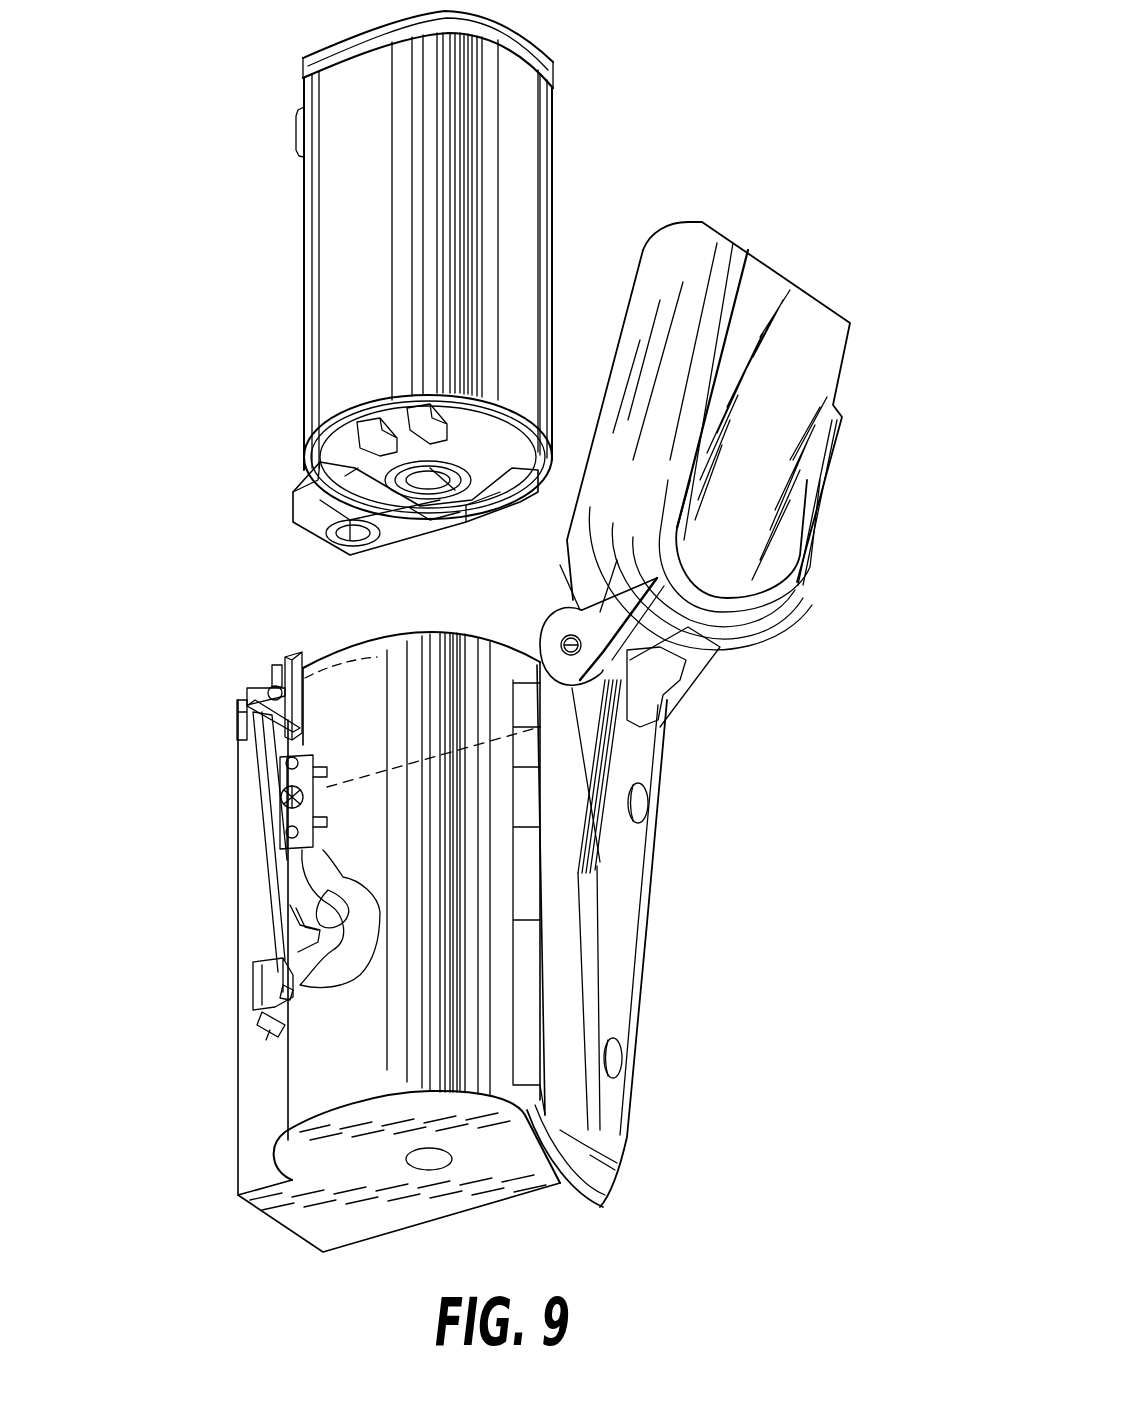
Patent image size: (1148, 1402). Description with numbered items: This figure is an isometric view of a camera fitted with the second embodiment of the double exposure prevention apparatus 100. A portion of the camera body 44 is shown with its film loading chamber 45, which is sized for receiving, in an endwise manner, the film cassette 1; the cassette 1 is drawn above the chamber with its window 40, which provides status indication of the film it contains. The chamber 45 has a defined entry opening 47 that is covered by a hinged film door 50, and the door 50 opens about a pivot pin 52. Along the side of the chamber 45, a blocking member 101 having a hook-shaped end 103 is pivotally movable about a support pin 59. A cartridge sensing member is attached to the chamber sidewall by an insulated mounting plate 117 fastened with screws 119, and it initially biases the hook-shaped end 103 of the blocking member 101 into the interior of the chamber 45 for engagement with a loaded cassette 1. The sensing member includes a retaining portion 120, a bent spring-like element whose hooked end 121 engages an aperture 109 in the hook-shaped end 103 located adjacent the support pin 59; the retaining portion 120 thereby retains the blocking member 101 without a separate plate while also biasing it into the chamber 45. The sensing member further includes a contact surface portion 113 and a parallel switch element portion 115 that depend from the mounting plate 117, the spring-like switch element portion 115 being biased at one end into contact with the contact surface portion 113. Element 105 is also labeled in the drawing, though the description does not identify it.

The film cassette 1 is at (300, 262).
The window 40 is at (325, 482).
The hinged film door 50 is at (840, 362).
The pivot pin 52 is at (558, 635).
The entry opening 47 is at (383, 663).
The film loading chamber 45 is at (315, 1068).
The camera body 44 is at (553, 825).
The double exposure prevention apparatus 100 is at (150, 663).
The support pin 59 is at (272, 688).
The hooked end 121 is at (240, 712).
The aperture 109 is at (270, 747).
The insulated mounting plate 117 is at (282, 815).
The retaining portion 120 is at (286, 763).
The screws 119 is at (288, 794).
The hook-shaped end 103 is at (330, 870).
The blocking member 101 is at (313, 927).
The bracket 105 is at (313, 957).
The contact surface portion 113 is at (268, 1012).
The switch element portion 115 is at (290, 990).